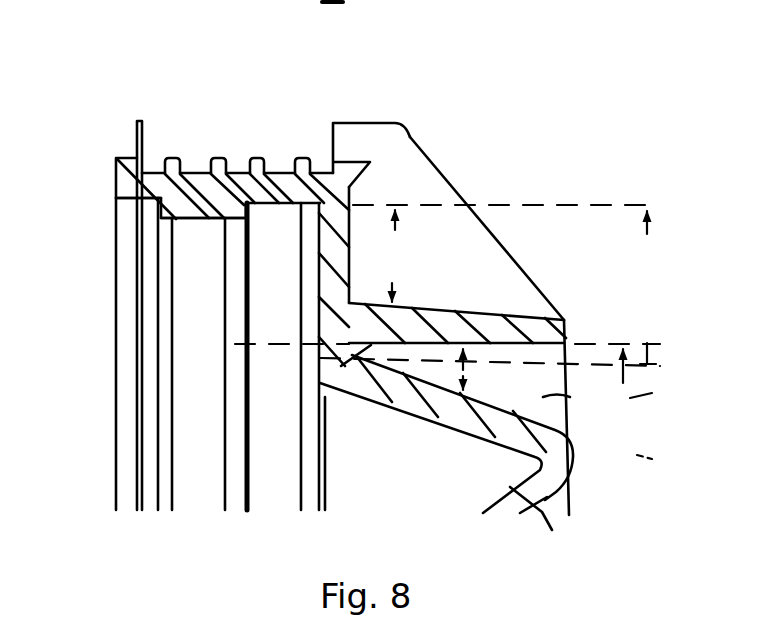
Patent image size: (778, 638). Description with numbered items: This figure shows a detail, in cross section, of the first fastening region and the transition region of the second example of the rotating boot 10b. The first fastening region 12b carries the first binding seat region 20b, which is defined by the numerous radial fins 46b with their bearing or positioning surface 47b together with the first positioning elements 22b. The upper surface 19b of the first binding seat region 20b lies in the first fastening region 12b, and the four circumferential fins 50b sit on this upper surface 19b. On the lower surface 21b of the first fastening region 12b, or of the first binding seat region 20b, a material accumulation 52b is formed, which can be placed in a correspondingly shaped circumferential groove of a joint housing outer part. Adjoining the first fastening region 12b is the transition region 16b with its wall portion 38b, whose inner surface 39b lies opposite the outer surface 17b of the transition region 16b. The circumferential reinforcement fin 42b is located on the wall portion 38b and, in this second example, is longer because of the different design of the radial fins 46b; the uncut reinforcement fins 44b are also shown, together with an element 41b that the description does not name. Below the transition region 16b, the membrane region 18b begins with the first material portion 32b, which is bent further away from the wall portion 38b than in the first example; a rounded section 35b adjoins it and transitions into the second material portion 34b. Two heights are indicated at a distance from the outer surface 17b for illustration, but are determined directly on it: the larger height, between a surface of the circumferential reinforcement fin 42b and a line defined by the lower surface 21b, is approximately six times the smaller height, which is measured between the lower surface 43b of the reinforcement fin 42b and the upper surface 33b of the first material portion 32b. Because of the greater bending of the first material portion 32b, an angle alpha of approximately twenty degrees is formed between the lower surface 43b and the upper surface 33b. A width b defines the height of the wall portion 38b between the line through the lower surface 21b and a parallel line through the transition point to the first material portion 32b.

The rotating boot 10b is at (600, 98).
The first fastening region 12b is at (181, 78).
The transition region 16b is at (503, 299).
The outer surface of the transition region 17b is at (362, 238).
The membrane region 18b is at (598, 472).
The upper surface of the first binding seat region 19b is at (238, 168).
The first binding seat region 20b is at (308, 116).
The lower surface of the first fastening region 21b is at (121, 201).
The first positioning elements 22b is at (136, 136).
The first material portion 32b is at (529, 434).
The upper surface of the first material portion 33b is at (440, 380).
The second material portion 34b is at (545, 504).
The rounded section 35b is at (570, 462).
The wall portion 38b is at (319, 247).
The inner surface of the wall portion 39b is at (319, 293).
The radial web 41b is at (454, 308).
The circumferential reinforcement fin 42b is at (572, 304).
The lower surface of the circumferential reinforcement fin 43b is at (356, 352).
The reinforcement fins 44b is at (600, 444).
The radial fins 46b is at (437, 176).
The bearing or positioning surface 47b is at (332, 152).
The circumferential fins 50b is at (170, 158).
The material accumulation 52b is at (177, 215).